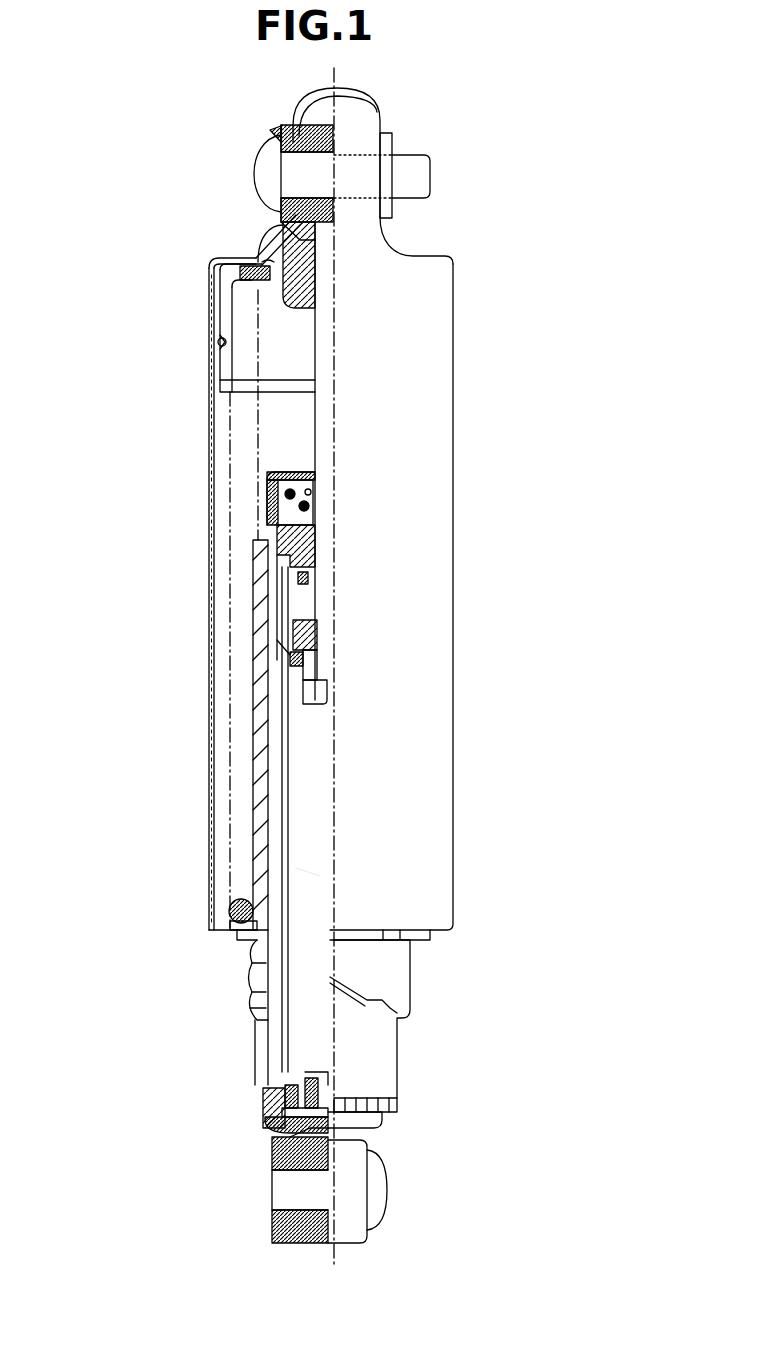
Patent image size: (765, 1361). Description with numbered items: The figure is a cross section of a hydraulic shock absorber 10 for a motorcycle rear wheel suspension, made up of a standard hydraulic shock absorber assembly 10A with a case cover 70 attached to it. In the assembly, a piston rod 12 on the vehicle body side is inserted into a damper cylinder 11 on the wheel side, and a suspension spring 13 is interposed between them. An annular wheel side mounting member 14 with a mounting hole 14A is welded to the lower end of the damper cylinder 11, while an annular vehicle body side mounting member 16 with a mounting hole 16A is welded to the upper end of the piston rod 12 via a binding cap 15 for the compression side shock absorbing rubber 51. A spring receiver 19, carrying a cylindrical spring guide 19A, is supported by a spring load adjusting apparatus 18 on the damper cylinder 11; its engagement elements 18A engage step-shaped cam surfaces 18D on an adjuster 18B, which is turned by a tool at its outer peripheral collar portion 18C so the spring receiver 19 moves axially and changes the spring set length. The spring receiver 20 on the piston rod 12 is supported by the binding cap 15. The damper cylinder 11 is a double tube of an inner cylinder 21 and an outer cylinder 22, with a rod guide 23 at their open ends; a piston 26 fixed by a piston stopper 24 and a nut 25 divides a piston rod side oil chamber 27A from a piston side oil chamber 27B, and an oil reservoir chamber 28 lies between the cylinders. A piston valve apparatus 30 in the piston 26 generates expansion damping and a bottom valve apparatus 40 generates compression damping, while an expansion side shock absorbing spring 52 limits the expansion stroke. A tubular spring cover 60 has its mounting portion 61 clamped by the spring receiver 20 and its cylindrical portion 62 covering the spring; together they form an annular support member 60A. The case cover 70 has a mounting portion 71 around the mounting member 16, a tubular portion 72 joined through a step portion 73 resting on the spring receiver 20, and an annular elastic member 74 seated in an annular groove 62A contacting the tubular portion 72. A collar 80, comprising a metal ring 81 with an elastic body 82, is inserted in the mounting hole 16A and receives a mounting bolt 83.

The hydraulic shock absorber 10 is at (150, 122).
The hydraulic shock absorber assembly 10A is at (280, 468).
The damper cylinder 11 is at (264, 499).
The piston rod 12 is at (322, 437).
The suspension spring 13 is at (235, 908).
The wheel side mounting member 14 is at (302, 1245).
The mounting hole 14A is at (283, 1226).
The binding cap 15 is at (288, 222).
The vehicle body side mounting member 16 is at (330, 135).
The mounting hole 16A is at (335, 148).
The spring load adjusting apparatus 18 is at (256, 962).
The engagement elements 18A is at (260, 1008).
The adjuster 18B is at (260, 980).
The outer peripheral collar portion 18C is at (260, 944).
The step-shaped cam surfaces 18D is at (405, 1018).
The spring receiver 19 is at (252, 928).
The cylindrical spring guide 19A is at (265, 745).
The spring receiver 20 is at (254, 262).
The inner cylinder 21 is at (290, 782).
The outer cylinder 22 is at (290, 515).
The rod guide 23 is at (292, 548).
The piston stopper 24 is at (325, 630).
The nut 25 is at (328, 694).
The piston 26 is at (288, 660).
The piston rod side oil chamber 27A is at (266, 613).
The piston side oil chamber 27B is at (308, 872).
The oil reservoir chamber 28 is at (280, 1054).
The piston valve apparatus 30 is at (278, 656).
The bottom valve apparatus 40 is at (318, 1068).
The compression side shock absorbing rubber 51 is at (302, 290).
The expansion side shock absorbing spring 52 is at (315, 583).
The spring cover 60 is at (263, 360).
The annular support member 60A is at (220, 262).
The mounting portion 61 is at (236, 278).
The cylindrical portion 62 is at (263, 378).
The annular groove 62A is at (219, 343).
The case cover 70 is at (207, 396).
The mounting portion 71 is at (299, 102).
The tubular portion 72 is at (212, 805).
The step portion 73 is at (268, 262).
The annular elastic member 74 is at (219, 340).
The collar 80 is at (280, 130).
The metal ring 81 is at (282, 166).
The elastic body 82 is at (278, 136).
The mounting bolt 83 is at (412, 178).